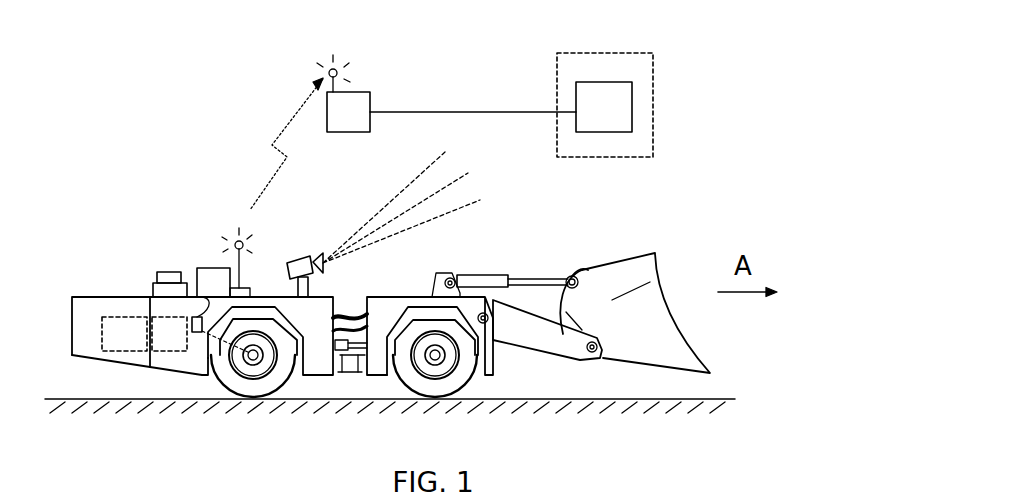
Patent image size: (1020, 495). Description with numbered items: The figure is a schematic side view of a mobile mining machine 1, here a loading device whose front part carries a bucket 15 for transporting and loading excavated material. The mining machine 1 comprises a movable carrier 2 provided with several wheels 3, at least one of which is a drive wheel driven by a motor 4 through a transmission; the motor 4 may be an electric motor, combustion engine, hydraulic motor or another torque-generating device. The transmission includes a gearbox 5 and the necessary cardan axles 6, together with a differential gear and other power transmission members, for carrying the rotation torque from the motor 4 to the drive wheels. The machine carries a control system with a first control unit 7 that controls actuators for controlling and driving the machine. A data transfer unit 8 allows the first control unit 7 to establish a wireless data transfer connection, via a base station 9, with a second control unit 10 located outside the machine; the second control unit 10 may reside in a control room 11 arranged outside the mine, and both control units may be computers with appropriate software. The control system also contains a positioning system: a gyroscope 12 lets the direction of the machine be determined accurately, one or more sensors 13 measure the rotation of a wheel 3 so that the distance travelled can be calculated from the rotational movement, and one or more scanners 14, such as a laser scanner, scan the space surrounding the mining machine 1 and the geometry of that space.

The mobile mining machine 1 is at (195, 188).
The movable carrier 2 is at (387, 303).
The wheels 3 is at (245, 387).
The motor 4 is at (113, 313).
The gearbox 5 is at (160, 352).
The cardan axles 6 is at (222, 349).
The first control unit 7 is at (213, 275).
The data transfer unit 8 is at (243, 287).
The base station 9 is at (340, 129).
The second control unit 10 is at (590, 125).
The control room 11 is at (613, 70).
The gyroscope 12 is at (157, 278).
The sensors 13 is at (197, 338).
The scanners 14 is at (298, 260).
The bucket 15 is at (642, 273).